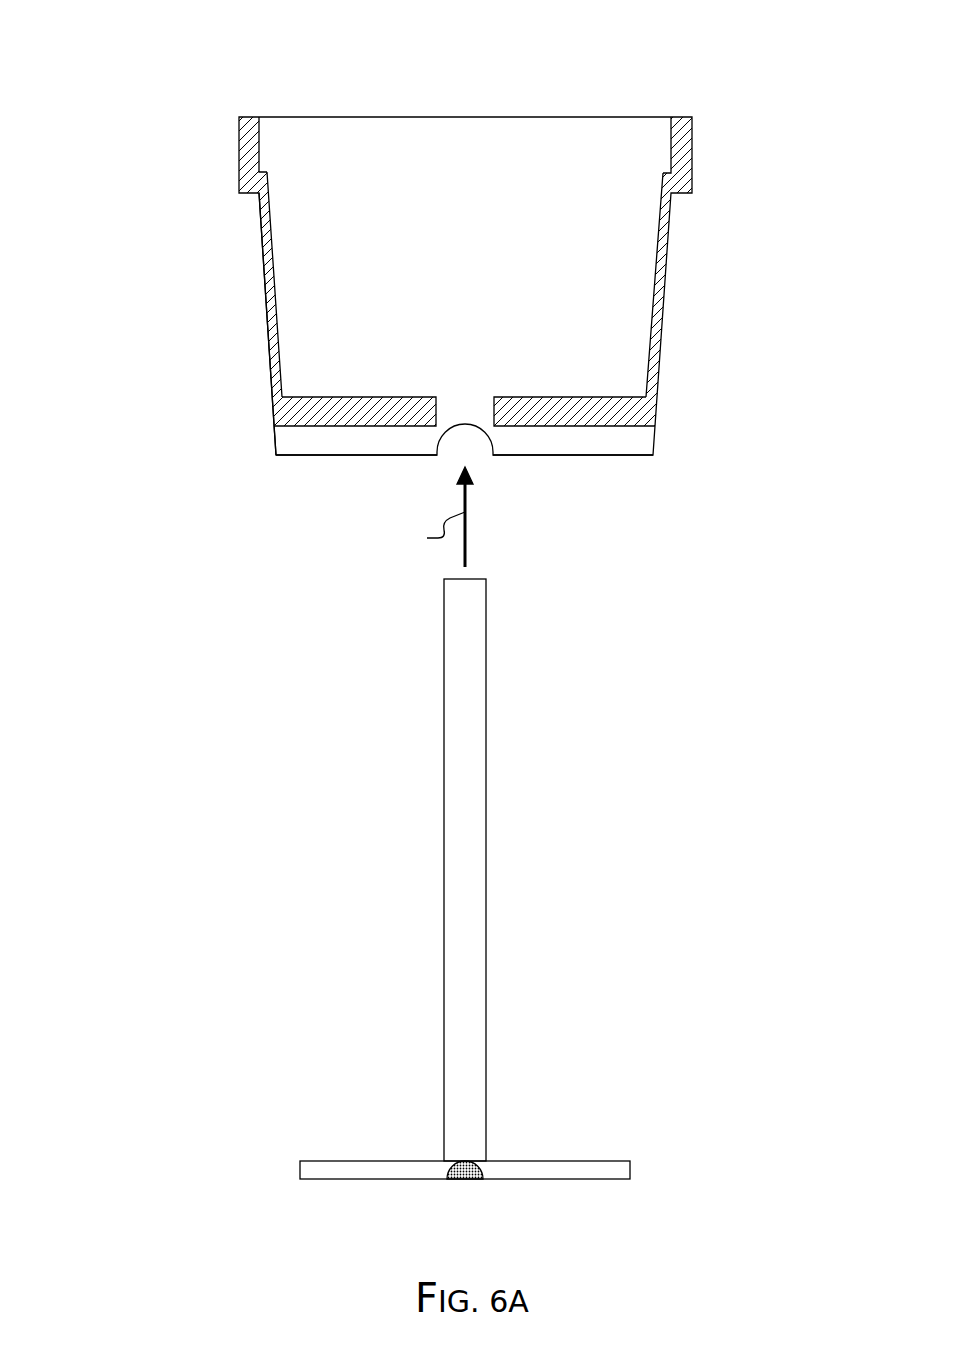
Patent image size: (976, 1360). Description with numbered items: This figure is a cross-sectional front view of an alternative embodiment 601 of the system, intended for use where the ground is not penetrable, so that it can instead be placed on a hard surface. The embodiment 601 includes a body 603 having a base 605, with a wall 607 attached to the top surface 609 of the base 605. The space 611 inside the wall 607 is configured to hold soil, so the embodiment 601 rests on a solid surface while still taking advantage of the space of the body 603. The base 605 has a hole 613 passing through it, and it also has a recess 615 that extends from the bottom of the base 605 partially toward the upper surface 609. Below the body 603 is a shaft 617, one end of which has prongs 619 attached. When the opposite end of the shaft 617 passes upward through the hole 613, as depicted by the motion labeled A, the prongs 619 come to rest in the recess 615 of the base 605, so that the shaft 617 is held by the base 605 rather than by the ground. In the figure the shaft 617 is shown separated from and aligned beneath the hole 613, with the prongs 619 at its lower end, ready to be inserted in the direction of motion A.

The embodiment 601 is at (91, 45).
The body 603 is at (229, 215).
The base 605 is at (293, 427).
The wall 607 is at (665, 285).
The top surface 609 is at (301, 391).
The space 611 is at (671, 126).
The hole 613 is at (494, 405).
The recess 615 is at (362, 455).
The shaft 617 is at (487, 785).
The prongs 619 is at (573, 1160).